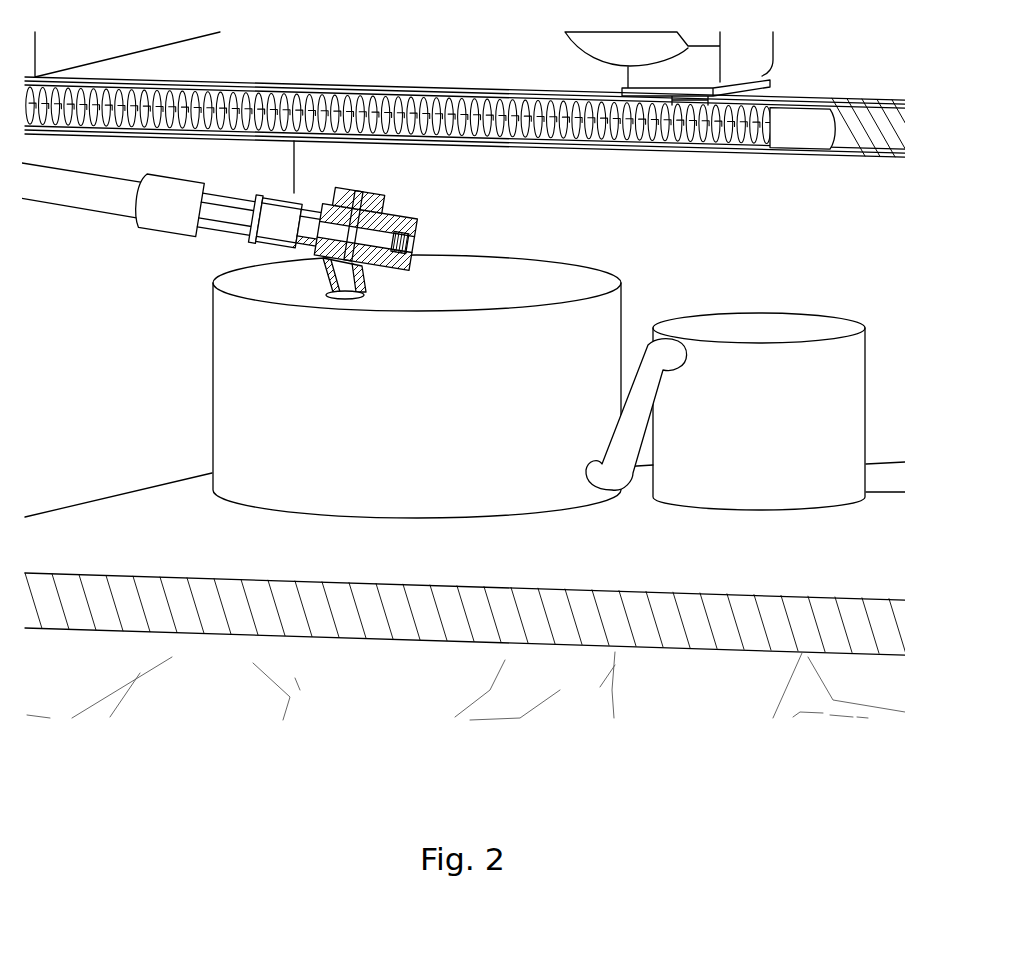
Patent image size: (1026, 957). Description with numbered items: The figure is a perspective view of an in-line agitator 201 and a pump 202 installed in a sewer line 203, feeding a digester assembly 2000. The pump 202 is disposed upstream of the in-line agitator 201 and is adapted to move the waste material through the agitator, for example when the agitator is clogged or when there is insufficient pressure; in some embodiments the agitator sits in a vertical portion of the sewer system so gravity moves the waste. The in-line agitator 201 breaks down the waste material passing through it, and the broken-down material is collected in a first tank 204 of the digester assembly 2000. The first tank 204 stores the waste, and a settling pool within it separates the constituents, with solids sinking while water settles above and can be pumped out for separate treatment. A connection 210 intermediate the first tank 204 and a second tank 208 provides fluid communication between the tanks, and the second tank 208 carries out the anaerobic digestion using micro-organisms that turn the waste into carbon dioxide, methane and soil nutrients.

The digester assembly 2000 is at (630, 227).
The in-line agitator 201 is at (416, 189).
The pump 202 is at (158, 228).
The sewer line 203 is at (109, 203).
The first tank 204 is at (432, 423).
The second tank 208 is at (780, 433).
The connection 210 is at (624, 450).